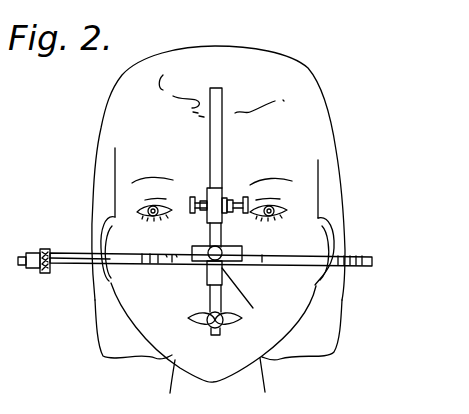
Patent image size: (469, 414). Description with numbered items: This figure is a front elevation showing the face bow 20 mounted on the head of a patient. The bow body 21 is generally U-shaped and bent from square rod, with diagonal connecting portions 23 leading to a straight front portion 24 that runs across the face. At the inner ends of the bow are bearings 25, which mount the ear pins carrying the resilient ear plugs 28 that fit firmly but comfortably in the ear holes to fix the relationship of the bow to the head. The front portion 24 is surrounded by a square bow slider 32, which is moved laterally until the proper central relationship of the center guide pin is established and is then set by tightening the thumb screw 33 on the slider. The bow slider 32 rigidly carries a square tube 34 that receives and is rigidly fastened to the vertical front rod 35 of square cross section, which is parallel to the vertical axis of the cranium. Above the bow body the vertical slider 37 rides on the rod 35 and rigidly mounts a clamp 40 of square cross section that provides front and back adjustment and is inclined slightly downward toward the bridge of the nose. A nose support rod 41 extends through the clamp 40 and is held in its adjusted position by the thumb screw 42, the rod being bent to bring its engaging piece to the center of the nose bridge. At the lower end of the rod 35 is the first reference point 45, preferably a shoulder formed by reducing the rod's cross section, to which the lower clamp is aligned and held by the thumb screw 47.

The face bow 20 is at (172, 255).
The bow body 21 is at (262, 258).
The diagonal connecting portions 23 is at (78, 266).
The straight front portion 24 is at (258, 250).
The bearings 25 is at (36, 253).
The ear plugs 28 is at (191, 197).
The bow slider 32 is at (230, 260).
The thumb screw 33 is at (207, 270).
The square tube 34 is at (249, 296).
The vertical front rod 35 is at (222, 151).
The vertical slider 37 is at (218, 192).
The clamp 40 is at (227, 214).
The nose support rod 41 is at (232, 204).
The thumb screw 42 is at (248, 200).
The first reference point 45 is at (196, 315).
The thumb screw 47 is at (220, 327).